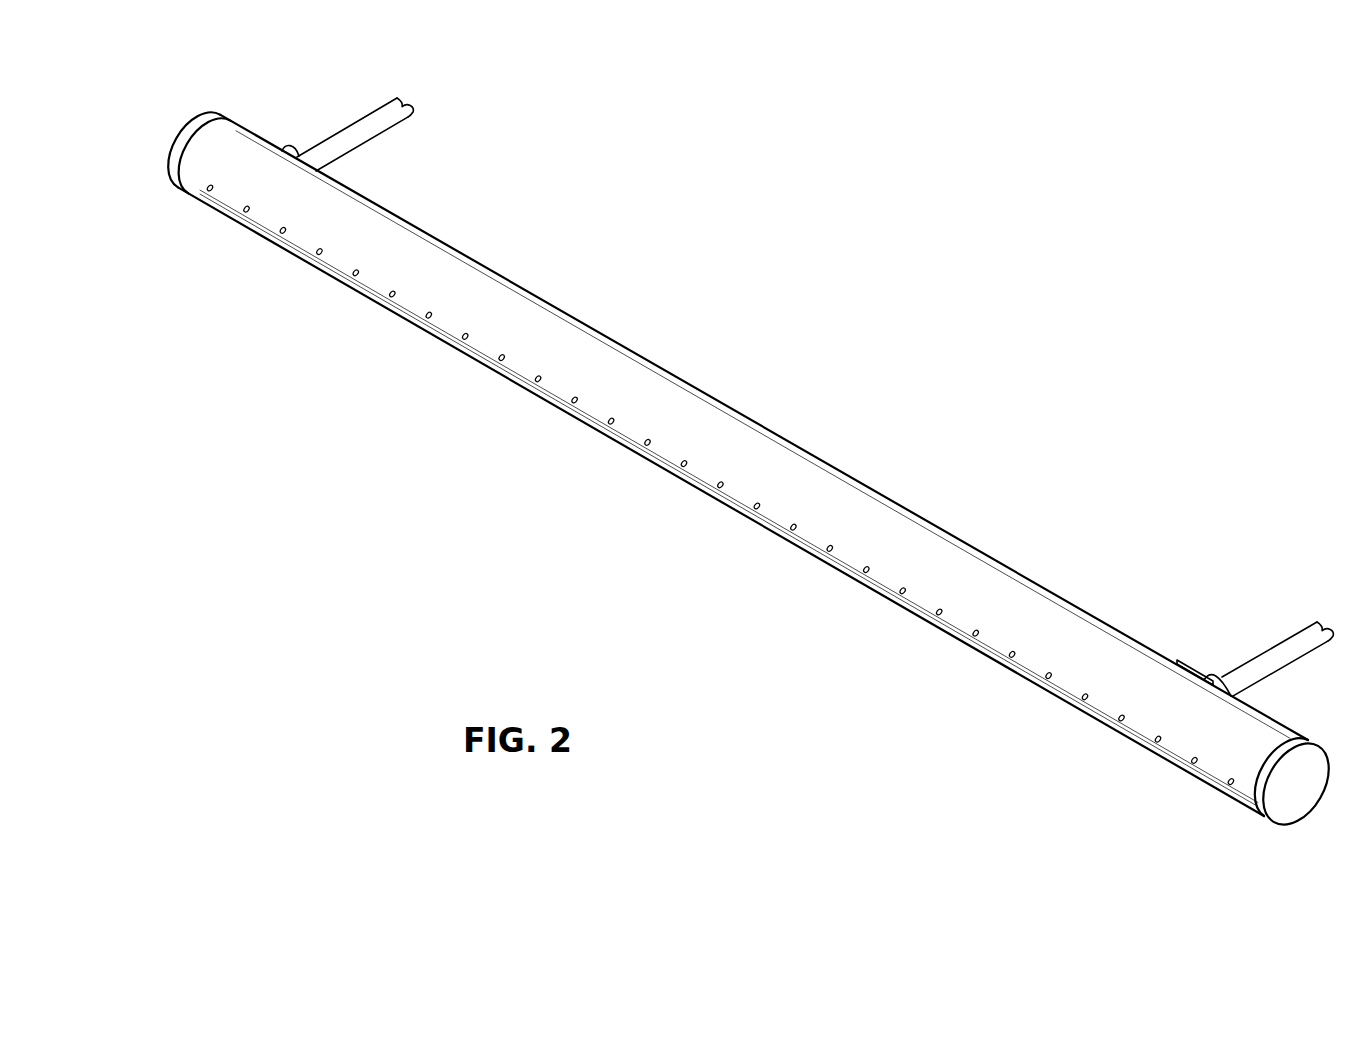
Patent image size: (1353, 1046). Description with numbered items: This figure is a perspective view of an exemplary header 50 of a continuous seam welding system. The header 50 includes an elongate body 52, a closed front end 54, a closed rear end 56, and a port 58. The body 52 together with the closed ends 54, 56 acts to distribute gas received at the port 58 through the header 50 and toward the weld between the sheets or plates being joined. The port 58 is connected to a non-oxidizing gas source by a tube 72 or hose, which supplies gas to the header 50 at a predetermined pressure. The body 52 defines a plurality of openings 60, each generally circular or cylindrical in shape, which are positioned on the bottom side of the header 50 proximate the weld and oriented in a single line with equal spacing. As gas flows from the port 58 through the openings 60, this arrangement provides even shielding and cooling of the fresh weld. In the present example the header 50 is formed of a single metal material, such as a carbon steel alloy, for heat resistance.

The header 50 is at (706, 462).
The elongate body 52 is at (681, 378).
The closed front end 54 is at (1278, 808).
The closed rear end 56 is at (177, 148).
The port 58 is at (296, 153).
The openings 60 is at (389, 297).
The tube 72 is at (373, 113).